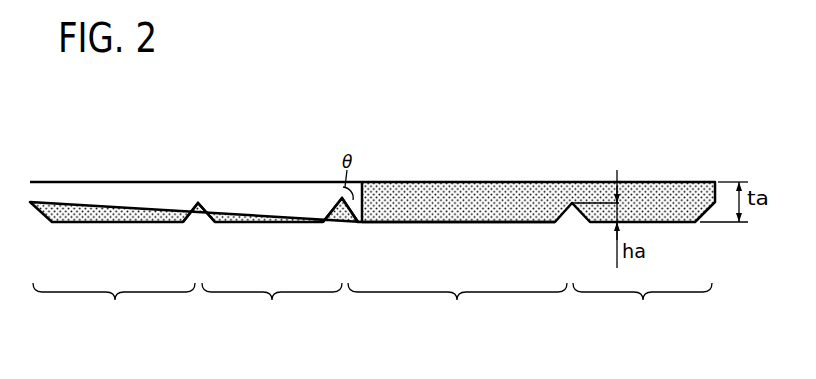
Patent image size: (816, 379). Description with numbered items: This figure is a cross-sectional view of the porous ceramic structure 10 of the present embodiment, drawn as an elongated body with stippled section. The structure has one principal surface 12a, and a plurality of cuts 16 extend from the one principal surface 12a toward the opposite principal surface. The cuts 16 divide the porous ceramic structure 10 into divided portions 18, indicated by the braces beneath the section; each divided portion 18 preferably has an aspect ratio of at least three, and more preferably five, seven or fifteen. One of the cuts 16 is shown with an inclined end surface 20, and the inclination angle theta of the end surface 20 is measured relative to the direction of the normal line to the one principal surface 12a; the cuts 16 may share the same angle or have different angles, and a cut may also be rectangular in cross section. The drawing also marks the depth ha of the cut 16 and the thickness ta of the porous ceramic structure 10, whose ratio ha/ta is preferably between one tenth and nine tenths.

The porous ceramic structure 10 is at (63, 130).
The one principal surface 12a is at (448, 225).
The cut 16 is at (201, 219).
The divided portion 18 is at (372, 305).
The end surface 20 is at (345, 208).